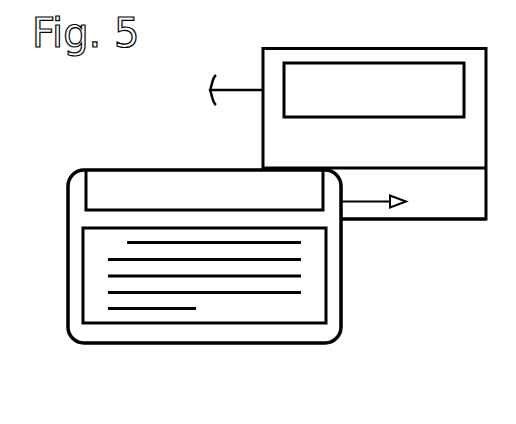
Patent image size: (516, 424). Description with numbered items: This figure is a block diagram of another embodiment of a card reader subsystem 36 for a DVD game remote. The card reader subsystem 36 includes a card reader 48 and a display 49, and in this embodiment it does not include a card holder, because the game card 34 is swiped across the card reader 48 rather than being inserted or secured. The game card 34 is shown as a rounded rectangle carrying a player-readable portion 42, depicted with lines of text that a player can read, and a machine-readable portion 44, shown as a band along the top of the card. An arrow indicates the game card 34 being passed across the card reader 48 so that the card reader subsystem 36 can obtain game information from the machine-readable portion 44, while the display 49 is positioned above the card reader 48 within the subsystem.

The game card 34 is at (67, 265).
The card reader subsystem 36 is at (431, 57).
The player-readable portion 42 is at (333, 288).
The machine-readable portion 44 is at (197, 176).
The card reader 48 is at (460, 207).
The display 49 is at (441, 93).